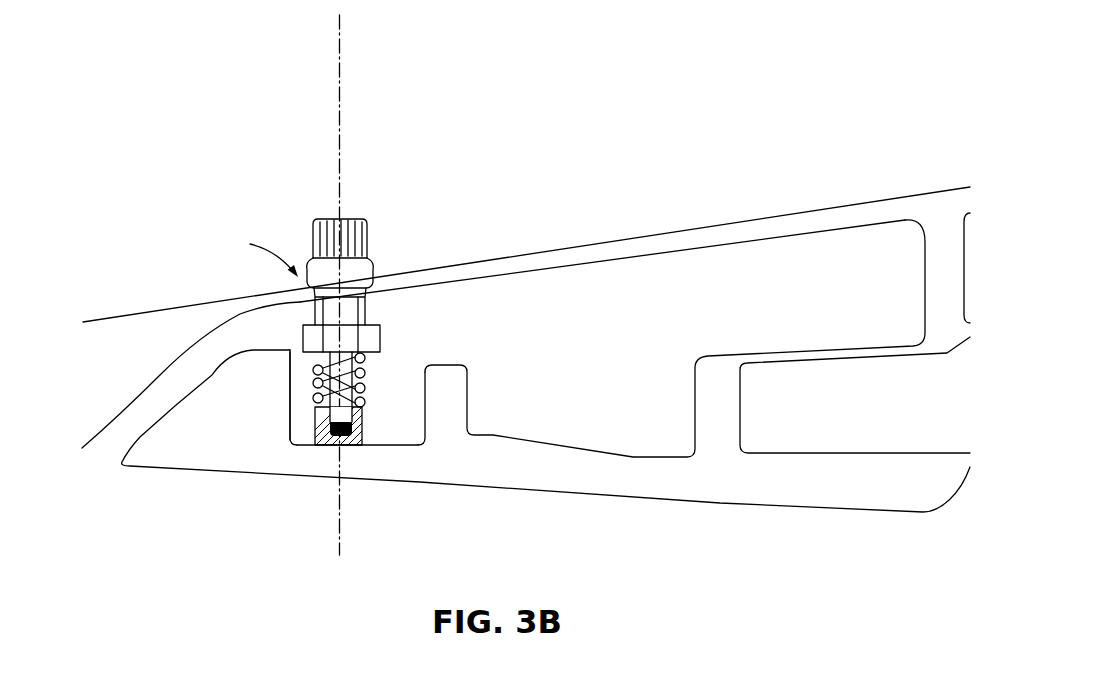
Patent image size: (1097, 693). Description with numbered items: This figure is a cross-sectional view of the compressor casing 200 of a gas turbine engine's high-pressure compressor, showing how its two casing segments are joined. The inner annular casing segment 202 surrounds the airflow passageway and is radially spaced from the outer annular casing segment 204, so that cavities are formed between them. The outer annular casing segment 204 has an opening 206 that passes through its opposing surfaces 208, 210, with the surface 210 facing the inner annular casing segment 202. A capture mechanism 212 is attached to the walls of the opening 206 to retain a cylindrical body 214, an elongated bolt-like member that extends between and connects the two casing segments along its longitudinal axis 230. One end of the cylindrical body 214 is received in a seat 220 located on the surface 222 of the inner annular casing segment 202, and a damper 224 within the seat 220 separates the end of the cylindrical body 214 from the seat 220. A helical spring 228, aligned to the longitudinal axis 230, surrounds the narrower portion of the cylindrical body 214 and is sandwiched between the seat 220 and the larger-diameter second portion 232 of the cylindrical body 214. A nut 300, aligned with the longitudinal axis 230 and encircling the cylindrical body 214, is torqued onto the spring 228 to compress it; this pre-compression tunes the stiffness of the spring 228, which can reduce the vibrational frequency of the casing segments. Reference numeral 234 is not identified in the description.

The compressor casing 200 is at (162, 163).
The inner annular casing segment 202 is at (515, 433).
The outer annular casing segment 204 is at (148, 311).
The opening 206 is at (384, 260).
The surface 208 is at (494, 256).
The surface 210 is at (522, 269).
The capture mechanism 212 is at (255, 253).
The cylindrical body 214 is at (356, 218).
The seat 220 is at (363, 435).
The surface 222 is at (413, 437).
The damper 224 is at (316, 405).
The spring 228 is at (312, 372).
The longitudinal axis 230 is at (341, 93).
The second portion 232 is at (372, 302).
The spring 234 is at (362, 377).
The nut 300 is at (385, 340).